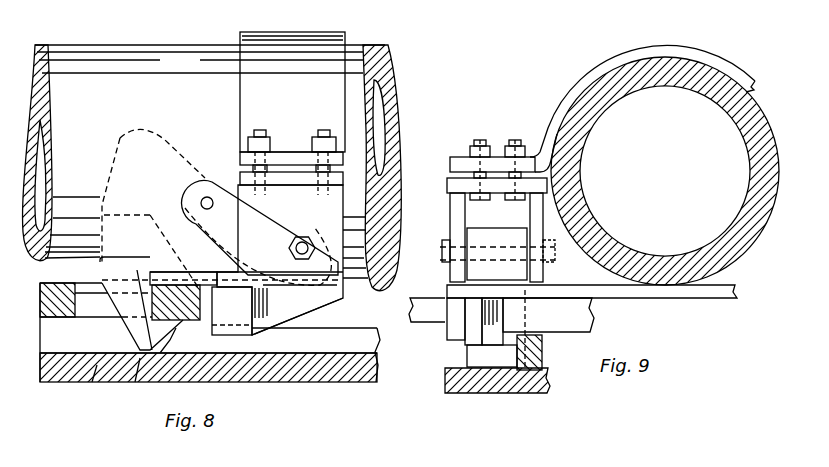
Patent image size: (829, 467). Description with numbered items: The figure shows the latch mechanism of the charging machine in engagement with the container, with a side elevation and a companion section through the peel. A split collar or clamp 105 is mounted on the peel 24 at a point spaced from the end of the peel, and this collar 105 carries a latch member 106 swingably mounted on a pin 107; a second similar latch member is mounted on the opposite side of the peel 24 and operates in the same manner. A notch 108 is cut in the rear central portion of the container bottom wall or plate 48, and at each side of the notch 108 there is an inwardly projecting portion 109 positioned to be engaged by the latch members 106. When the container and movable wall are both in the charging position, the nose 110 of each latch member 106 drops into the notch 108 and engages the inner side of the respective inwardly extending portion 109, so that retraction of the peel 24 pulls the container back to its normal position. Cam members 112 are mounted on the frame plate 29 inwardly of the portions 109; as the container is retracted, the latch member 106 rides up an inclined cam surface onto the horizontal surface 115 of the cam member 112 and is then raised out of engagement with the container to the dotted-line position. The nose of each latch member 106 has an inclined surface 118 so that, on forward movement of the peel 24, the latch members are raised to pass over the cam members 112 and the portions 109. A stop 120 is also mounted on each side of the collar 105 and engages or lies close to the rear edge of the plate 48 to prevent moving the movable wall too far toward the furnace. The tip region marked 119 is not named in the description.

In FIG. 8, the peel 24 is at (400, 135).
In FIG. 9, the peel 24 is at (740, 255).
In FIG. 8, the flat top 29 is at (378, 380).
In FIG. 9, the flat top 29 is at (550, 393).
In FIG. 8, the bottom wall 48 is at (40, 318).
In FIG. 9, the bottom wall 48 is at (595, 315).
In FIG. 8, the split collar 105 is at (340, 34).
In FIG. 9, the split collar 105 is at (722, 60).
In FIG. 8, the latch member 106 is at (110, 140).
In FIG. 9, the latch member 106 is at (467, 357).
In FIG. 8, the pin 107 is at (318, 246).
In FIG. 9, the pin 107 is at (442, 250).
In FIG. 8, the notch 108 is at (76, 319).
In FIG. 9, the notch 108 is at (565, 335).
In FIG. 8, the inwardly projecting portion 109 is at (200, 327).
In FIG. 9, the inwardly projecting portion 109 is at (505, 318).
In FIG. 8, the nose 110 is at (135, 383).
In FIG. 9, the nose 110 is at (508, 393).
In FIG. 8, the cam member 112 is at (378, 338).
In FIG. 9, the cam member 112 is at (545, 352).
In FIG. 8, the horizontal surface 115 is at (345, 330).
In FIG. 8, the inclined surface 118 is at (95, 382).
In FIG. 8, the hook tip 119 is at (166, 355).
In FIG. 8, the stop 120 is at (252, 337).
In FIG. 9, the stop 120 is at (447, 292).